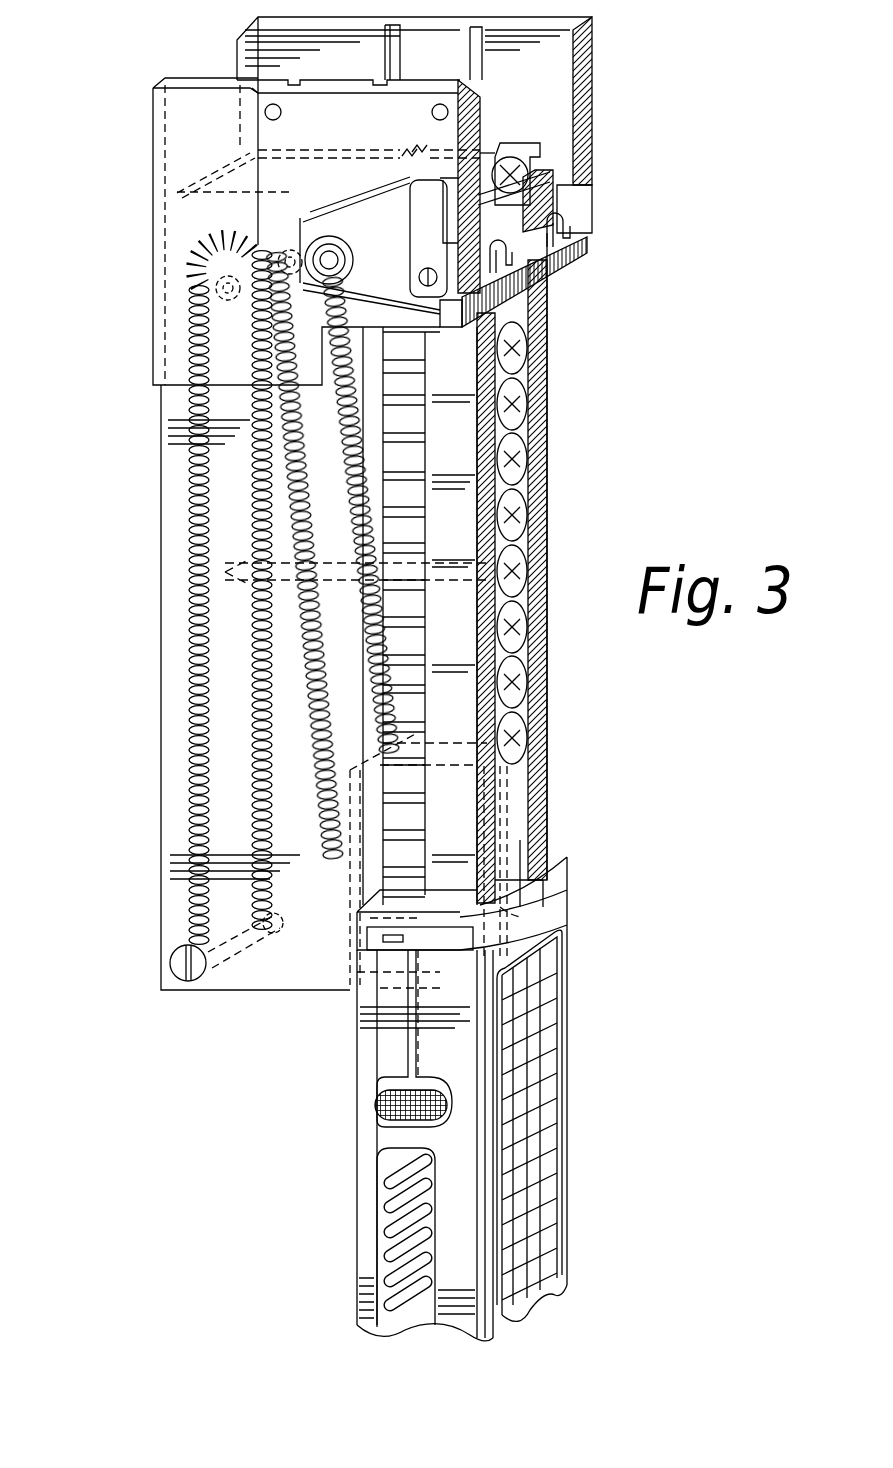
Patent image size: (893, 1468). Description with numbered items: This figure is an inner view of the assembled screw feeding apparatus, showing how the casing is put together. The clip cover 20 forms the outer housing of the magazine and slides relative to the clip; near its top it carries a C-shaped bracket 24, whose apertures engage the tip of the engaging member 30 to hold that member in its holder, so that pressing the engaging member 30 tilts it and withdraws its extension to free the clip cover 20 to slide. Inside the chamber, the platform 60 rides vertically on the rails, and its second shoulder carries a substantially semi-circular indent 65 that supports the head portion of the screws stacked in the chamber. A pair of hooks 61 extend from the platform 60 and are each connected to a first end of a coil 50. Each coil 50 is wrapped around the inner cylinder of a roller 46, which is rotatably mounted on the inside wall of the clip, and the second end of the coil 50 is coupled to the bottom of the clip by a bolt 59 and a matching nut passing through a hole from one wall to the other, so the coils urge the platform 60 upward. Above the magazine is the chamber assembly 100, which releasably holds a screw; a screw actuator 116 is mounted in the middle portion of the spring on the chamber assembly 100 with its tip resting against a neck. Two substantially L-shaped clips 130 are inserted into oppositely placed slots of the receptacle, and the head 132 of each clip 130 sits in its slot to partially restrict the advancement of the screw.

The clip cover 20 is at (560, 1040).
The C-shaped bracket 24 is at (570, 888).
The engaging member 30 is at (385, 1062).
The roller 46 is at (237, 262).
The coil 50 is at (192, 596).
The bolt 59 is at (178, 990).
The platform 60 is at (513, 833).
The hook 61 is at (333, 880).
The indent 65 is at (523, 780).
The chamber assembly 100 is at (152, 133).
The screw actuator 116 is at (580, 251).
The L-shaped clip 130 is at (366, 258).
The head 132 is at (548, 283).